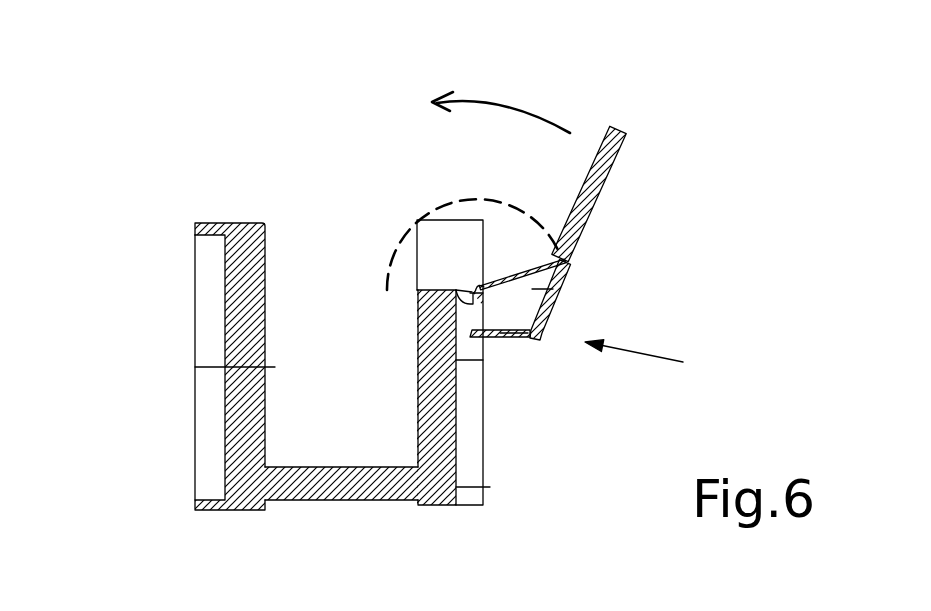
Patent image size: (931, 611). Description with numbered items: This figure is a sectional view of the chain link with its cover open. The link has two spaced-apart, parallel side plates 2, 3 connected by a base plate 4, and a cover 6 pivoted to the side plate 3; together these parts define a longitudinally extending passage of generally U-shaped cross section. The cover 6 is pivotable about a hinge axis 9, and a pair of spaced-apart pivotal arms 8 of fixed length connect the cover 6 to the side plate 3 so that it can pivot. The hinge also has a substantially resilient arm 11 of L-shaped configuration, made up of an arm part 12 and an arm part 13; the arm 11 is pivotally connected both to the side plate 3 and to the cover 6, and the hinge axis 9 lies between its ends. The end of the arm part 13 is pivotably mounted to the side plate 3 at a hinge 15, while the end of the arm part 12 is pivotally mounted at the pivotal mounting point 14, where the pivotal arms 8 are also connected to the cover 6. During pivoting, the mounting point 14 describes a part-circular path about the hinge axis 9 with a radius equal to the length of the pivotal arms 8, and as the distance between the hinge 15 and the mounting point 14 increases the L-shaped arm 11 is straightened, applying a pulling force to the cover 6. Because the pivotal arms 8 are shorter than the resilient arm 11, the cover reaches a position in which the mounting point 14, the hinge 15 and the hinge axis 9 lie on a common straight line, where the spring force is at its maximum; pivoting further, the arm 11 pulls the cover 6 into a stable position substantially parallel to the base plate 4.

The side plate 2 is at (238, 420).
The side plate 3 is at (468, 487).
The base plate 4 is at (347, 499).
The cover 6 is at (624, 130).
The pivotal arms 8 is at (524, 280).
The hinge axis 9 is at (480, 300).
The resilient arm 11 is at (660, 357).
The arm part 12 is at (548, 305).
The arm part 13 is at (500, 333).
The pivotal mounting point 14 is at (570, 262).
The hinge 15 is at (473, 333).